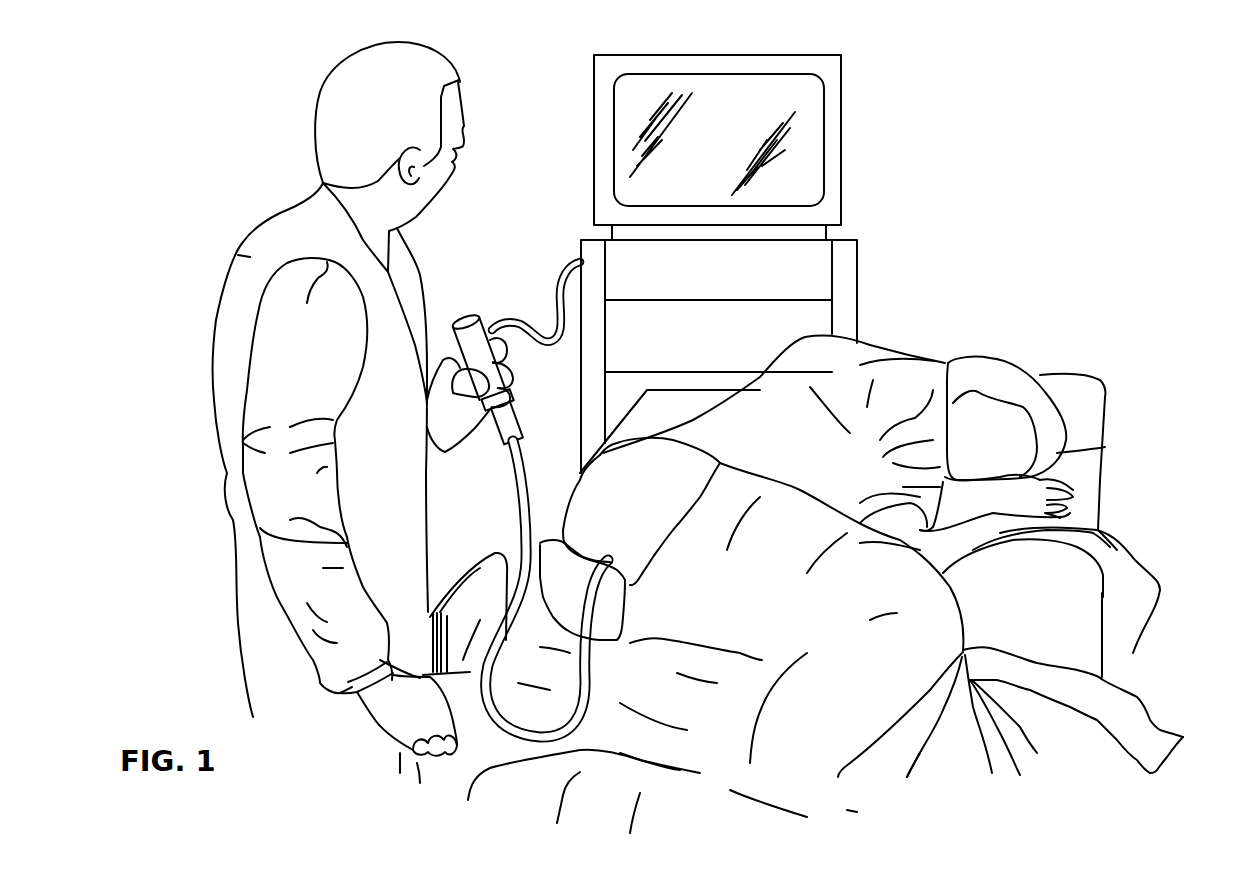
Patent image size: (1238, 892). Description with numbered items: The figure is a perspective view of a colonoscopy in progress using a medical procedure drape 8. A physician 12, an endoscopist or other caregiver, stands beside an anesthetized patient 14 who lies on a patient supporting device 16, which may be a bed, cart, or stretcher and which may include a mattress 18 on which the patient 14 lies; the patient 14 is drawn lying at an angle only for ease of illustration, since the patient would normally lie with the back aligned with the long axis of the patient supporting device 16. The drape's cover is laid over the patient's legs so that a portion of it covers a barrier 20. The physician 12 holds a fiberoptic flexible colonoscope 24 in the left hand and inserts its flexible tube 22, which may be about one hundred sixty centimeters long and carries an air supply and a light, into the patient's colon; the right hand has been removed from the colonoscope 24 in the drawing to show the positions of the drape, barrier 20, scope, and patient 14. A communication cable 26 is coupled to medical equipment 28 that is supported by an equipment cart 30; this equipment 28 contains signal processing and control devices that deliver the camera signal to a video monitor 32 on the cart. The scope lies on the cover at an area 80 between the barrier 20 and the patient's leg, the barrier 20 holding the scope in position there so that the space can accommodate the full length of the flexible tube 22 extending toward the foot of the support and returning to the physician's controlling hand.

The medical procedure drape 8 is at (356, 774).
The physician 12 is at (243, 322).
The patient 14 is at (913, 390).
The patient supporting device 16 is at (1113, 481).
The mattress 18 is at (668, 400).
The barrier 20 is at (420, 678).
The flexible tube 22 is at (520, 508).
The fiberoptic flexible colonoscope 24 is at (483, 318).
The communication cable 26 is at (578, 263).
The medical equipment 28 is at (816, 258).
The equipment cart 30 is at (858, 257).
The video monitor 32 is at (810, 102).
The area 80 is at (537, 677).